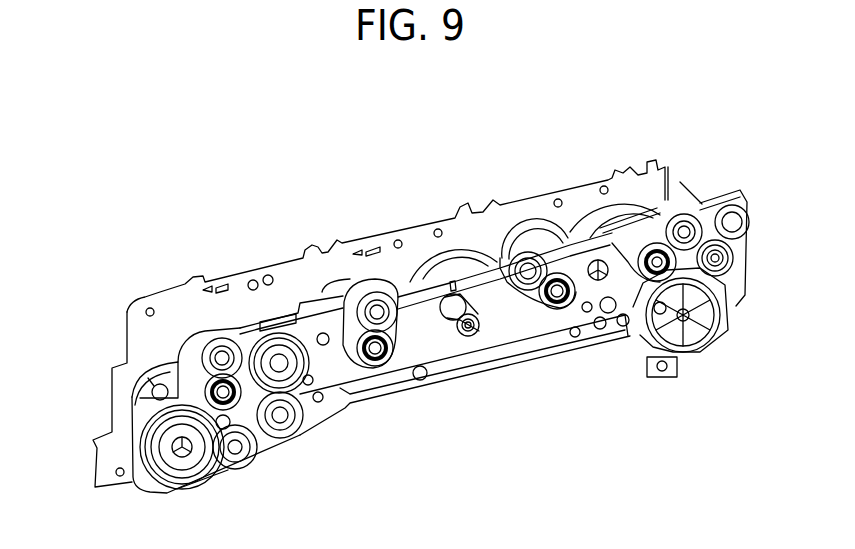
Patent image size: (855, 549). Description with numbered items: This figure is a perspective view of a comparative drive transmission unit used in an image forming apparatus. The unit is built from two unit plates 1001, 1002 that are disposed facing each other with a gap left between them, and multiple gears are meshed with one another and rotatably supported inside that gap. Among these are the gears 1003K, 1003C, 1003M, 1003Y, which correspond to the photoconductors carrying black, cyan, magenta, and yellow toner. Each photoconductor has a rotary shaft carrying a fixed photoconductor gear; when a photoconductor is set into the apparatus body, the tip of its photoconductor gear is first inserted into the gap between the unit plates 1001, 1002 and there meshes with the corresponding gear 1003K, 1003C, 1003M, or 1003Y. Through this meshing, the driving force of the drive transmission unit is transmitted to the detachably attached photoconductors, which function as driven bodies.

The unit plate 1001 is at (133, 338).
The unit plate 1002 is at (142, 494).
The gear 1003K is at (213, 335).
The gear 1003C is at (363, 297).
The gear 1003M is at (515, 252).
The gear 1003Y is at (676, 215).